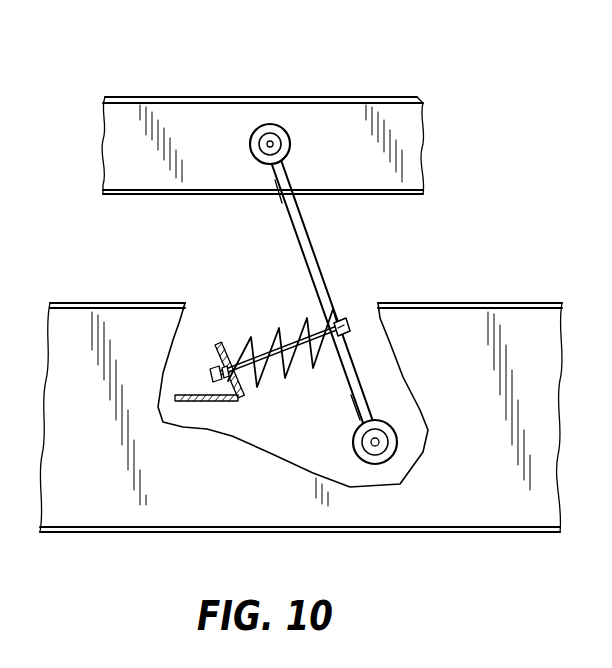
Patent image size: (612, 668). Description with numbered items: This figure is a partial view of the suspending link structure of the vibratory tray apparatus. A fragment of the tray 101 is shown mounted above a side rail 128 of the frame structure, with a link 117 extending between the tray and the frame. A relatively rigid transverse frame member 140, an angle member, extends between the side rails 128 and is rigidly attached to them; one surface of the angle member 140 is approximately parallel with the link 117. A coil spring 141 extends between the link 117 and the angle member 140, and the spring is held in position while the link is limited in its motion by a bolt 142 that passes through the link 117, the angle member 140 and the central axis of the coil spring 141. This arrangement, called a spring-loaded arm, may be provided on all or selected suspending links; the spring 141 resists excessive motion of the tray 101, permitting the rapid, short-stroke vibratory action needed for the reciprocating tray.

The tray 101 is at (384, 97).
The link 117 is at (312, 244).
The side rail 128 is at (506, 303).
The transverse frame member 140 is at (193, 400).
The coil spring 141 is at (281, 327).
The bolt 142 is at (349, 325).